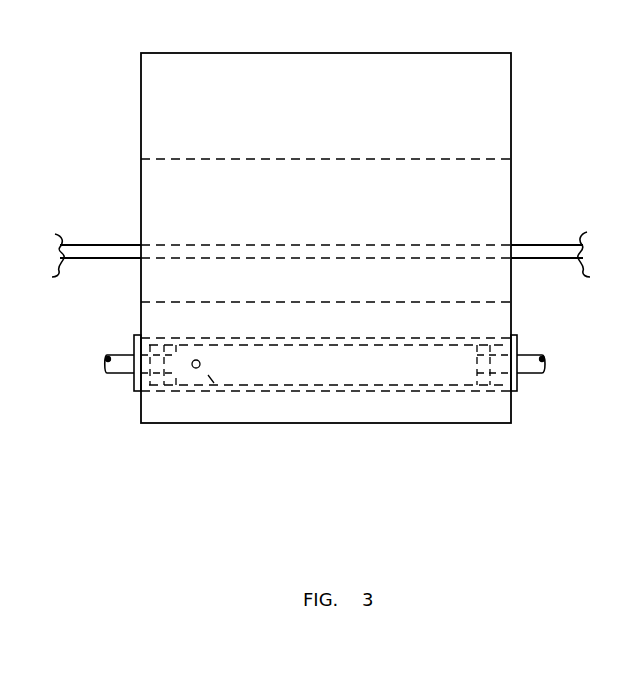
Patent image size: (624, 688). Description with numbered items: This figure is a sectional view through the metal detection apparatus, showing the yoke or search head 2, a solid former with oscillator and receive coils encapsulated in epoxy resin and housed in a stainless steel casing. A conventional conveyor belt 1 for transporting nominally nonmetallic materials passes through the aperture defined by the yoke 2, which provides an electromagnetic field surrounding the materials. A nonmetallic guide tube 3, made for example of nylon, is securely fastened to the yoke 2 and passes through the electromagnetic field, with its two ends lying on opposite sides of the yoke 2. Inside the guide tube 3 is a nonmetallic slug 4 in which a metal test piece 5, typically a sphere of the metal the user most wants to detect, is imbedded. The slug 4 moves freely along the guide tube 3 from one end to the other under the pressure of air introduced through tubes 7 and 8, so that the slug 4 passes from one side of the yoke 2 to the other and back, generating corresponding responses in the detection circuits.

The conveyor belt 1 is at (112, 245).
The yoke 2 is at (141, 93).
The guide tube 3 is at (432, 390).
The slug 4 is at (213, 372).
The test piece 5 is at (192, 367).
The tube 7 is at (135, 341).
The tube 8 is at (517, 391).